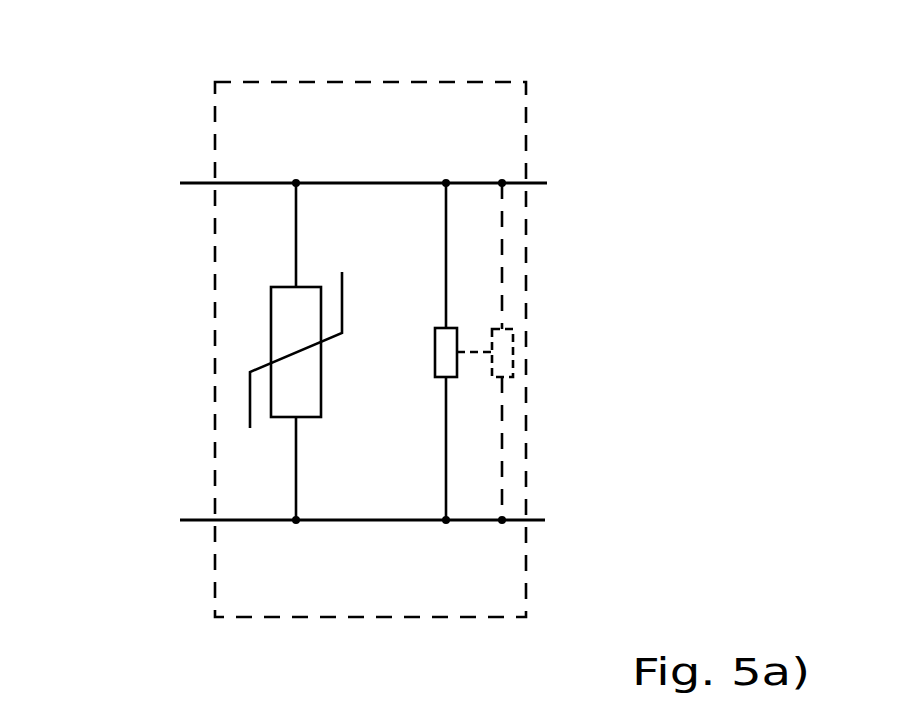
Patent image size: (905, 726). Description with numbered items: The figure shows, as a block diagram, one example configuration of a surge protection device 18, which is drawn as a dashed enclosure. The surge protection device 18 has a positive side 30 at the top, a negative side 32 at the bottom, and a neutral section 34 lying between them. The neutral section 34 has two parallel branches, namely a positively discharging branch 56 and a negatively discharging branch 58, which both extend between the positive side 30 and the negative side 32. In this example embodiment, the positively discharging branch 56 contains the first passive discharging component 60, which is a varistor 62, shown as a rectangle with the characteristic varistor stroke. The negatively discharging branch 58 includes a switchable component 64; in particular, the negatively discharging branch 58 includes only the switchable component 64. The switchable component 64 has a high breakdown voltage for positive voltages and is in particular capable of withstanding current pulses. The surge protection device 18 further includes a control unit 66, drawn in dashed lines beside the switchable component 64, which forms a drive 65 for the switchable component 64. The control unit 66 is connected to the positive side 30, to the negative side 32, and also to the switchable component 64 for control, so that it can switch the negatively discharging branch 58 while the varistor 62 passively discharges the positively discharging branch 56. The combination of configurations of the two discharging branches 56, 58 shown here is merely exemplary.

The surge protection device 18 is at (473, 82).
The positive side 30 is at (228, 183).
The negative side 32 is at (243, 520).
The neutral section 34 is at (387, 369).
The positively discharging branch 56 is at (191, 343).
The negatively discharging branch 58 is at (585, 378).
The first passive discharging component 60 is at (191, 350).
The varistor 62 is at (282, 332).
The switchable component 64 is at (447, 352).
The drive 65 is at (595, 351).
The control unit 66 is at (503, 358).